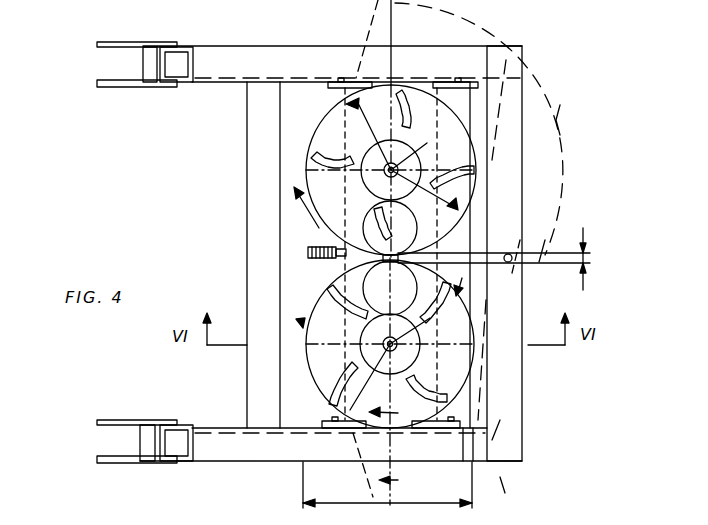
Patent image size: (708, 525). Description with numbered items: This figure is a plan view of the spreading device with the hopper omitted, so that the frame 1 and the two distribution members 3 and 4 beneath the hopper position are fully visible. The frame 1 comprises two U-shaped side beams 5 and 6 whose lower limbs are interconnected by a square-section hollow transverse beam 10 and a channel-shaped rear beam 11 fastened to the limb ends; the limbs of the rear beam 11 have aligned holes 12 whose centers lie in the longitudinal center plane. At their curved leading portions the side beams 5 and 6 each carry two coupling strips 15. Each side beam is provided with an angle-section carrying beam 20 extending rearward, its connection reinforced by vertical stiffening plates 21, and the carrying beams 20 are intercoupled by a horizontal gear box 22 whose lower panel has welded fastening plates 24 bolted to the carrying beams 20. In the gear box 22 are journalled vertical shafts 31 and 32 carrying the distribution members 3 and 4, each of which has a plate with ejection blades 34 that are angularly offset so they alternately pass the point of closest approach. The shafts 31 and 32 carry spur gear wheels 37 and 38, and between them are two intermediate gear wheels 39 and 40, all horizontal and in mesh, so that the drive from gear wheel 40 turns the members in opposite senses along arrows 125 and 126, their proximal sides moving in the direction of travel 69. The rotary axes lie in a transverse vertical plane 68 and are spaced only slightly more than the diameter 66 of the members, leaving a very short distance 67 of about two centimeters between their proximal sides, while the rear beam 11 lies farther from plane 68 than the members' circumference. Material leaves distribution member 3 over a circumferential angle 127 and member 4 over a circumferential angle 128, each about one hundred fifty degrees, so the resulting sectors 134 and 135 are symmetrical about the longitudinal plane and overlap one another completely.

The frame 1 is at (242, 157).
The distribution member 3 is at (476, 153).
The distribution member 4 is at (304, 356).
The side beam 5 is at (190, 46).
The side beam 6 is at (194, 423).
The transverse beam 10 is at (255, 115).
The rear beam 11 is at (505, 373).
The holes 12 is at (505, 252).
The coupling strips 15 is at (97, 45).
The carrying beam 20 is at (288, 55).
The stiffening plates 21 is at (226, 57).
The gear box 22 is at (302, 378).
The fastening plates 24 is at (352, 80).
The shaft 31 is at (404, 127).
The shaft 32 is at (393, 372).
The ejection blades 34 is at (317, 151).
The spur gear wheel 37 is at (338, 124).
The spur gear wheel 38 is at (354, 333).
The gear wheel 39 is at (350, 197).
The gear wheel 40 is at (340, 268).
The diameter 66 is at (409, 497).
The distance 67 is at (592, 263).
The vertical plane 68 is at (399, 21).
The direction of operative travel 69 is at (65, 352).
The arrow 125 is at (300, 206).
The arrow 126 is at (300, 318).
The circumferential angle 127 is at (452, 122).
The circumferential angle 128 is at (447, 394).
The sector 134 is at (515, 410).
The sector 135 is at (566, 106).